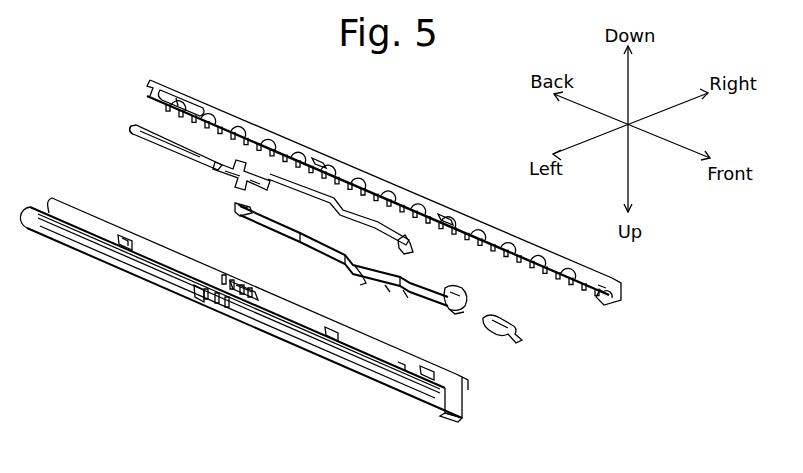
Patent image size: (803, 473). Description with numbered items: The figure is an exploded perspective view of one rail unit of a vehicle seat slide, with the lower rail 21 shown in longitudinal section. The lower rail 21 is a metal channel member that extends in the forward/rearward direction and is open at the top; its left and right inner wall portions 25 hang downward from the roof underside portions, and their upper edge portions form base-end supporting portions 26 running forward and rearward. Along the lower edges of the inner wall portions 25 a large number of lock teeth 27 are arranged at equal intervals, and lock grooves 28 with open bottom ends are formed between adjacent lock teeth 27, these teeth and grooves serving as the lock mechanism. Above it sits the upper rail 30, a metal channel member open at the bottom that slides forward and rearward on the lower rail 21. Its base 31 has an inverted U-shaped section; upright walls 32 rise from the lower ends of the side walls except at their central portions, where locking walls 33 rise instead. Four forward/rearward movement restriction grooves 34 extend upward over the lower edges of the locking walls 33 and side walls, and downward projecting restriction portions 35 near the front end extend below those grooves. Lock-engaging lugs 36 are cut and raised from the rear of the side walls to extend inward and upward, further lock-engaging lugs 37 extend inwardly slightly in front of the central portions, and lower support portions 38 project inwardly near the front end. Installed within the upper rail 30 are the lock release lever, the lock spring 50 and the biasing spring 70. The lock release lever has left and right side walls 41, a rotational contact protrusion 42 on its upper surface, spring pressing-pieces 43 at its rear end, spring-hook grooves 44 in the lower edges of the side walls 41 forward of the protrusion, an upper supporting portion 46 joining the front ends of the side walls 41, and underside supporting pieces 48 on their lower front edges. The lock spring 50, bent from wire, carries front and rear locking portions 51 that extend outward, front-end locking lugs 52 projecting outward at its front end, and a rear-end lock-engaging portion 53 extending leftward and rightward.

The lower rail 21 is at (490, 222).
The inner wall portions 25 is at (162, 97).
The base-end supporting portions 26 is at (580, 300).
The lock teeth 27 is at (394, 196).
The lock grooves 28 is at (334, 170).
The upper rail 30 is at (270, 346).
The base 31 is at (455, 412).
The upright walls 32 is at (46, 238).
The locking walls 33 is at (199, 297).
The forward/rearward movement restriction grooves 34 is at (240, 280).
The restriction portions 35 is at (262, 300).
The lock-engaging lugs 36 is at (125, 236).
The lock-engaging lugs 37 is at (328, 338).
The lower support portions 38 is at (432, 368).
The side walls 41 is at (343, 257).
The rotational contact protrusion 42 is at (370, 283).
The spring pressing-pieces 43 is at (238, 213).
The spring-hook grooves 44 is at (406, 299).
The upper supporting portion 46 is at (458, 313).
The underside supporting pieces 48 is at (462, 303).
The lock spring 50 is at (140, 126).
The locking portions 51 is at (264, 165).
The front-end locking lugs 52 is at (408, 250).
The rear-end lock-engaging portion 53 is at (130, 131).
The biasing spring 70 is at (518, 327).